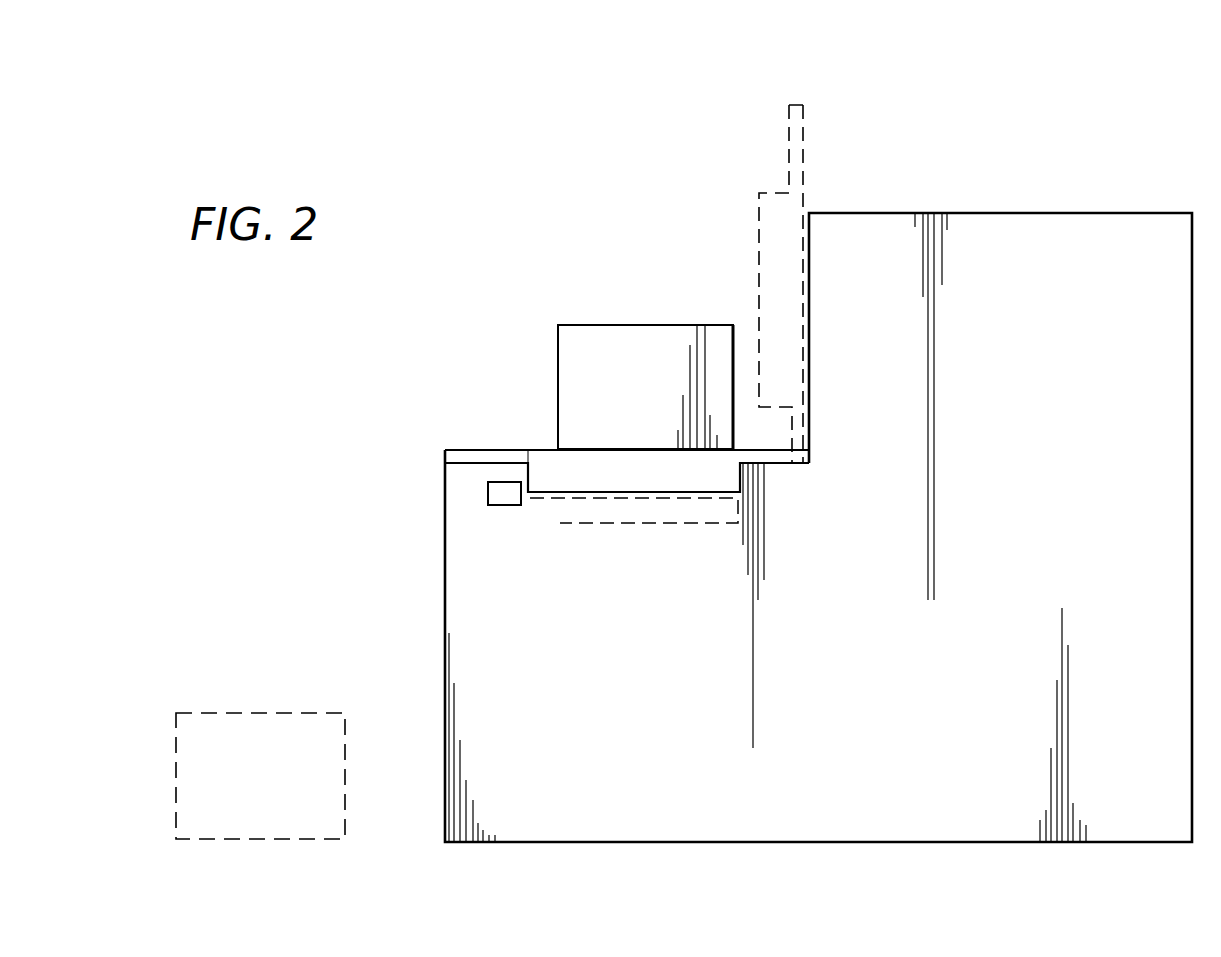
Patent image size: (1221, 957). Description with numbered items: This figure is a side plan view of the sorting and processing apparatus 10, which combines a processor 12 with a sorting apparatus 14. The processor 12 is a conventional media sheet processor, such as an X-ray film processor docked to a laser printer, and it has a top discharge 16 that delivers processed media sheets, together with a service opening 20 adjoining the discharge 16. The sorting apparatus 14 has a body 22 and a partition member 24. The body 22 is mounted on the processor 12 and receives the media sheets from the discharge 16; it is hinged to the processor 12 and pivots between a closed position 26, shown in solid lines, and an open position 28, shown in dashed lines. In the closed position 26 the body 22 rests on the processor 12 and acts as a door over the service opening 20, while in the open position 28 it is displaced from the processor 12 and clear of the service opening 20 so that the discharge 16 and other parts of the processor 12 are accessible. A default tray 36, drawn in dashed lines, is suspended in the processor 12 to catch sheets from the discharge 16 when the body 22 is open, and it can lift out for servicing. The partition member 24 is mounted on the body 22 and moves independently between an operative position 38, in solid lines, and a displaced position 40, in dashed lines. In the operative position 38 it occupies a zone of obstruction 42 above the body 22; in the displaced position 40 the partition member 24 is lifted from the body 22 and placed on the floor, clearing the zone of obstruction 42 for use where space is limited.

The sorting and processing apparatus 10 is at (1057, 105).
The processor 12 is at (878, 843).
The sorting apparatus 14 is at (645, 312).
The top discharge 16 is at (488, 494).
The service opening 20 is at (548, 460).
The body 22 is at (445, 458).
The partition member 24 is at (645, 362).
The closed position 26 is at (486, 456).
The open position 28 is at (797, 105).
The default tray 36 is at (555, 512).
The operative position 38 is at (668, 325).
The displaced position 40 is at (285, 712).
The zone of obstruction 42 is at (557, 355).